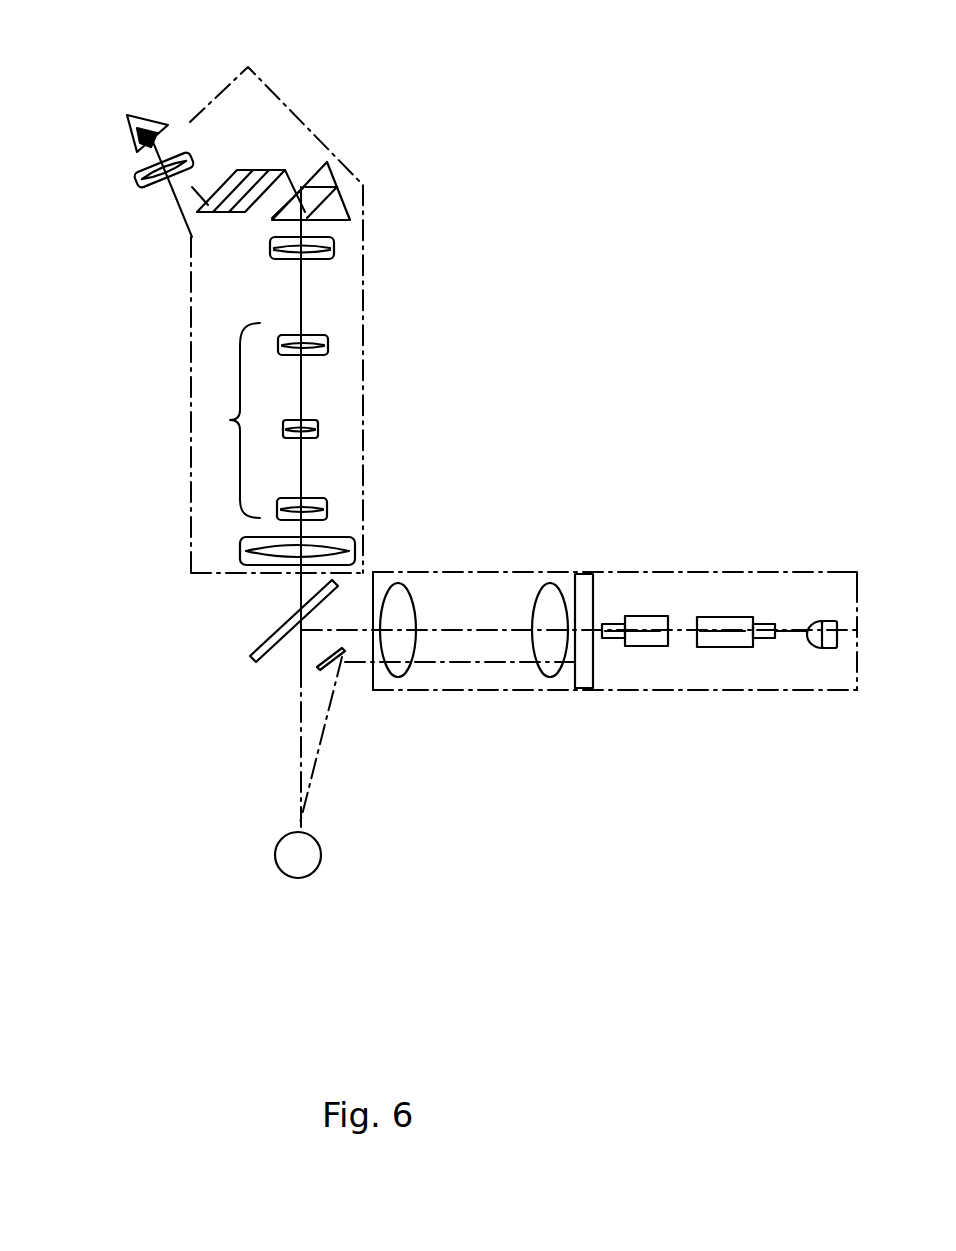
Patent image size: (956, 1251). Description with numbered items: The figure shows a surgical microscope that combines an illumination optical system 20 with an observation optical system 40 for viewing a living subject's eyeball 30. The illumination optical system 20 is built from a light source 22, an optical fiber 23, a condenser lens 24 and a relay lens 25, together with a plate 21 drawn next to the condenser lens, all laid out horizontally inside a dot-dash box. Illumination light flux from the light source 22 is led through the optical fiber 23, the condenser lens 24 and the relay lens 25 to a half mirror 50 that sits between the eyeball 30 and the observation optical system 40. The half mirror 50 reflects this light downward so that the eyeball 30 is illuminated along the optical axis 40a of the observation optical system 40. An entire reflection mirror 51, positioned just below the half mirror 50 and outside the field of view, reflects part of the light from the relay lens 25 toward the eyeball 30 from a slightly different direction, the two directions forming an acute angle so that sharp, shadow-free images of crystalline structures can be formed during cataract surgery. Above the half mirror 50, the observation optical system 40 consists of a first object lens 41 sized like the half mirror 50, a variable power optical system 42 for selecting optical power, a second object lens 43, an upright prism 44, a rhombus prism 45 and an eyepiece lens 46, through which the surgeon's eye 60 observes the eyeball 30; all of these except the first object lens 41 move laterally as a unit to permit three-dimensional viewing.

The illumination optical system 20 is at (478, 568).
The filter plate 21 is at (590, 575).
The light source 22 is at (807, 650).
The optical fiber 23 is at (653, 647).
The condenser lens 24 is at (545, 575).
The relay lens 25 is at (397, 575).
The eyeball 30 is at (275, 843).
The observation optical system 40 is at (372, 338).
The optical axis 40a is at (297, 587).
The first object lens 41 is at (247, 547).
The variable power optical system 42 is at (230, 420).
The second object lens 43 is at (320, 260).
The upright prism 44 is at (345, 202).
The rhombus prism 45 is at (253, 167).
The eyepiece lens 46 is at (145, 187).
The half mirror 50 is at (260, 648).
The entire reflection mirror 51 is at (348, 670).
The surgeon's eye 60 is at (143, 122).